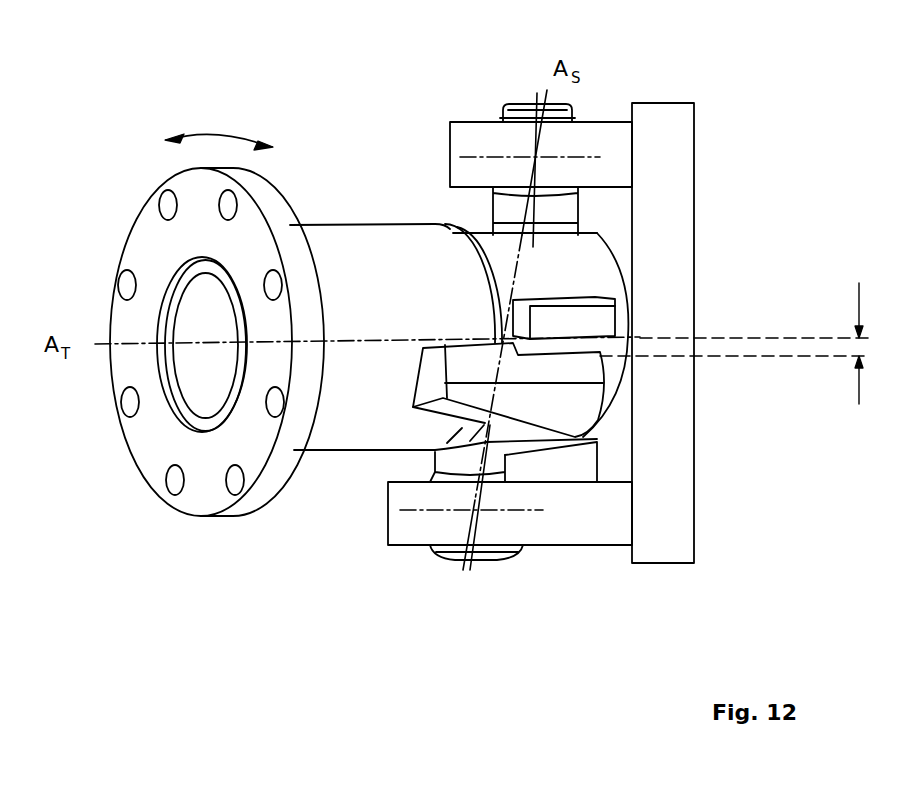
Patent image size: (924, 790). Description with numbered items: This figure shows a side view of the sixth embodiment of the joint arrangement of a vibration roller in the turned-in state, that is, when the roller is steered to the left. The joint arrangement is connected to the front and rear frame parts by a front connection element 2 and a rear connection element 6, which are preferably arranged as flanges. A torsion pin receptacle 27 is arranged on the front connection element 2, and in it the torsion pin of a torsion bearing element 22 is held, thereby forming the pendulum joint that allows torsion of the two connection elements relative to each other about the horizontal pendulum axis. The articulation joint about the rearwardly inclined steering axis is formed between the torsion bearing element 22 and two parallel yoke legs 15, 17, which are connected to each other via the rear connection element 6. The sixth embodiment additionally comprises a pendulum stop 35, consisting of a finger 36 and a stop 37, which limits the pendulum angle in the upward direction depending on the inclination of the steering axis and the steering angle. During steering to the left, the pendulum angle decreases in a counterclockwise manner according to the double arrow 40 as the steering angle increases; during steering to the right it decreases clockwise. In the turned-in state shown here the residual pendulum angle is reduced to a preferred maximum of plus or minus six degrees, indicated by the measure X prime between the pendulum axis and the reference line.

The front connection element 2 is at (162, 442).
The rear connection element 6 is at (670, 188).
The yoke leg 15 is at (412, 537).
The yoke leg 17 is at (600, 130).
The torsion bearing element 22 is at (588, 262).
The torsion pin receptacle 27 is at (353, 248).
The pendulum stop 35 is at (613, 347).
The finger 36 is at (577, 395).
The stop 37 is at (602, 308).
The double arrow 40 is at (219, 129).